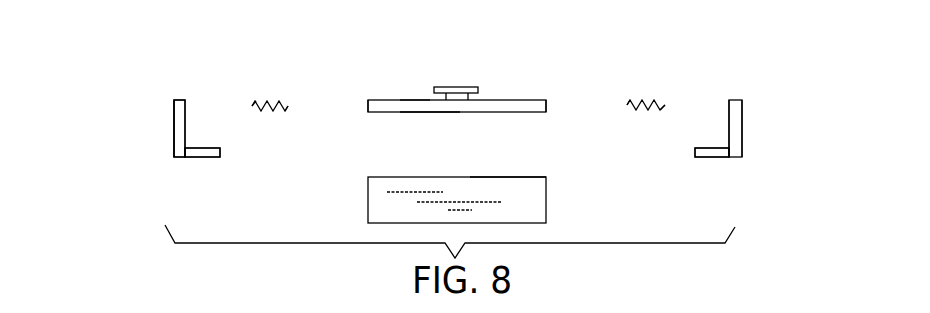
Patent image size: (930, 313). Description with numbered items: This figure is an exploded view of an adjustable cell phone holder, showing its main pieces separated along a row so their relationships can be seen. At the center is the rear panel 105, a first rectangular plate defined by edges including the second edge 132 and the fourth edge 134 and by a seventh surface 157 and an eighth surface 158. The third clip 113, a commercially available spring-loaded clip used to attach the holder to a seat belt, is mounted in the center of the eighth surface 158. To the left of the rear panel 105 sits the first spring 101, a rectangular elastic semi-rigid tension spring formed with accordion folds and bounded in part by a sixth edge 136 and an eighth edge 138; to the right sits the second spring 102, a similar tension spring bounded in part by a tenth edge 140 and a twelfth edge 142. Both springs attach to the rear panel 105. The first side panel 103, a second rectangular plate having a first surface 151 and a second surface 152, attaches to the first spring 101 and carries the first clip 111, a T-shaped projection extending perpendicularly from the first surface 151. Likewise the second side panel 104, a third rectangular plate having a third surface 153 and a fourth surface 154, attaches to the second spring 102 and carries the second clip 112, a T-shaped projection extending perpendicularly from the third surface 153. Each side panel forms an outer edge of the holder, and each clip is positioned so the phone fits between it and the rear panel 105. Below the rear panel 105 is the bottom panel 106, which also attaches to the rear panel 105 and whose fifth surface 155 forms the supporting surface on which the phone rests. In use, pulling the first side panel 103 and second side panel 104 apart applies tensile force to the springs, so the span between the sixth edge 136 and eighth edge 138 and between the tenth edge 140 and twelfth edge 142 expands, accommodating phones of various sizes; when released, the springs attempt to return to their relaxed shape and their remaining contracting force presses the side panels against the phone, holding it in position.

The first spring 101 is at (290, 106).
The second spring 102 is at (642, 102).
The first side panel 103 is at (174, 138).
The second side panel 104 is at (742, 132).
The rear panel 105 is at (520, 100).
The bottom panel 106 is at (430, 177).
The first clip 111 is at (203, 157).
The second clip 112 is at (712, 157).
The third clip 113 is at (447, 87).
The second edge 132 is at (546, 106).
The fourth edge 134 is at (368, 103).
The sixth edge 136 is at (288, 106).
The eighth edge 138 is at (252, 106).
The tenth edge 140 is at (665, 107).
The twelfth edge 142 is at (627, 105).
The first surface 151 is at (185, 110).
The second surface 152 is at (174, 120).
The third surface 153 is at (729, 112).
The fourth surface 154 is at (742, 112).
The fifth surface 155 is at (483, 187).
The seventh surface 157 is at (428, 112).
The eighth surface 158 is at (413, 100).